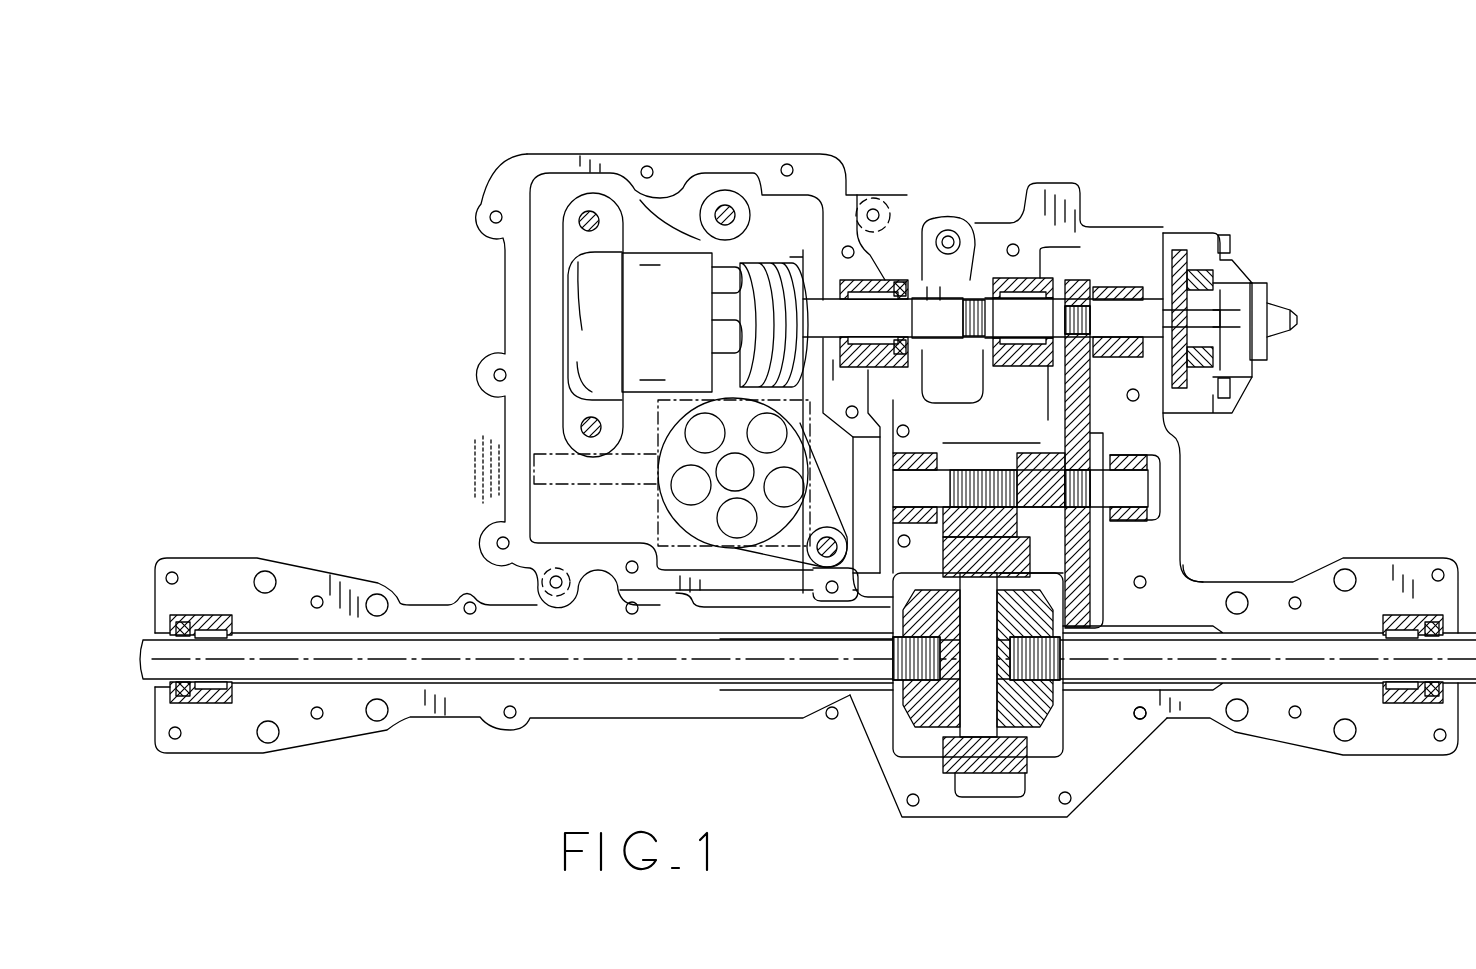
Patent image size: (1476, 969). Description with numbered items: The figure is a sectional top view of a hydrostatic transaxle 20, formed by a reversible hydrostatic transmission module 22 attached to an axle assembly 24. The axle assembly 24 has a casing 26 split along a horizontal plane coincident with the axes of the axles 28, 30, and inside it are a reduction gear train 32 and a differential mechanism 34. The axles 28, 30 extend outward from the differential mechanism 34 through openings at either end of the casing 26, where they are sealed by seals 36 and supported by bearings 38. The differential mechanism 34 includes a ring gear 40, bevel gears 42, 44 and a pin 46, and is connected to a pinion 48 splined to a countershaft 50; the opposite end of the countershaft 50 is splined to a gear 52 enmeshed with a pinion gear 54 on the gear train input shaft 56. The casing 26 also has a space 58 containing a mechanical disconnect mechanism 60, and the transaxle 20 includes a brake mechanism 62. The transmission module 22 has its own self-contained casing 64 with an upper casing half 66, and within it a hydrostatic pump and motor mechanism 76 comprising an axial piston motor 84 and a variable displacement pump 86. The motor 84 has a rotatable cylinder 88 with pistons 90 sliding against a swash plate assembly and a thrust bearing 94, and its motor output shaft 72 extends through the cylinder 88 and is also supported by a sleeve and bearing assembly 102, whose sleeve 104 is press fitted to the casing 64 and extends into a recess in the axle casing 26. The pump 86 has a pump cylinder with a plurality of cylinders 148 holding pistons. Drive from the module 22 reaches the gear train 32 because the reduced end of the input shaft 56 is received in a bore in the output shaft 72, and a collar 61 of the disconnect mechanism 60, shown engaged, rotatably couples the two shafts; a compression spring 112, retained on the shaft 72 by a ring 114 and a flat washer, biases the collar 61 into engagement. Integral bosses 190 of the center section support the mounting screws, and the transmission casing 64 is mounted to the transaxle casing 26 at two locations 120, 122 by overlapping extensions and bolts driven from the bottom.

The transaxle 20 is at (476, 807).
The hydrostatic transmission module 22 is at (508, 113).
The axle assembly 24 is at (1207, 150).
The casing 26 is at (1162, 527).
The axle 28 is at (145, 668).
The axle 30 is at (1467, 690).
The reduction gear train 32 is at (1134, 436).
The differential mechanism 34 is at (942, 802).
The seal 36 is at (182, 697).
The bearing 38 is at (172, 614).
The ring gear 40 is at (990, 785).
The bevel gear 42 is at (1024, 737).
The bevel gear 44 is at (907, 693).
The pin 46 is at (987, 727).
The pinion 48 is at (1000, 530).
The countershaft 50 is at (1143, 483).
The gear 52 is at (1083, 603).
The pinion gear 54 is at (1097, 377).
The gear train input shaft 56 is at (1037, 310).
The space 58 is at (940, 223).
The mechanical disconnect mechanism 60 is at (969, 229).
The collar 61 is at (953, 360).
The brake mechanism 62 is at (1252, 280).
The casing 64 is at (639, 140).
The upper casing half 66 is at (513, 305).
The motor output shaft 72 is at (862, 315).
The hydrostatic pump and motor mechanism 76 is at (671, 217).
The axial piston motor 84 is at (637, 340).
The variable displacement pump 86 is at (731, 573).
The rotatable cylinder 88 is at (690, 253).
The piston 90 is at (725, 265).
The thrust bearing 94 is at (757, 265).
The sleeve and bearing assembly 102 is at (874, 256).
The sleeve 104 is at (887, 283).
The compression spring 112 is at (927, 300).
The ring 114 is at (880, 405).
The mounting location 120 is at (538, 590).
The mounting location 122 is at (873, 198).
The cylinder 148 is at (705, 490).
The integral boss 190 is at (577, 228).